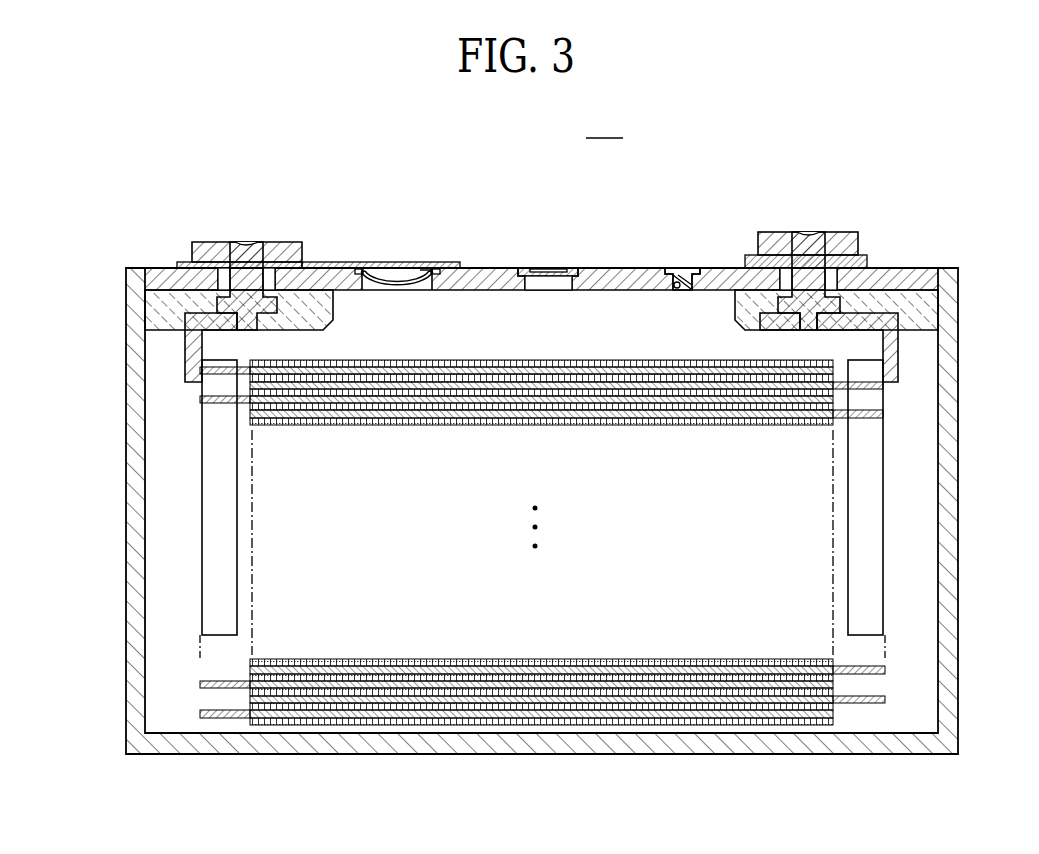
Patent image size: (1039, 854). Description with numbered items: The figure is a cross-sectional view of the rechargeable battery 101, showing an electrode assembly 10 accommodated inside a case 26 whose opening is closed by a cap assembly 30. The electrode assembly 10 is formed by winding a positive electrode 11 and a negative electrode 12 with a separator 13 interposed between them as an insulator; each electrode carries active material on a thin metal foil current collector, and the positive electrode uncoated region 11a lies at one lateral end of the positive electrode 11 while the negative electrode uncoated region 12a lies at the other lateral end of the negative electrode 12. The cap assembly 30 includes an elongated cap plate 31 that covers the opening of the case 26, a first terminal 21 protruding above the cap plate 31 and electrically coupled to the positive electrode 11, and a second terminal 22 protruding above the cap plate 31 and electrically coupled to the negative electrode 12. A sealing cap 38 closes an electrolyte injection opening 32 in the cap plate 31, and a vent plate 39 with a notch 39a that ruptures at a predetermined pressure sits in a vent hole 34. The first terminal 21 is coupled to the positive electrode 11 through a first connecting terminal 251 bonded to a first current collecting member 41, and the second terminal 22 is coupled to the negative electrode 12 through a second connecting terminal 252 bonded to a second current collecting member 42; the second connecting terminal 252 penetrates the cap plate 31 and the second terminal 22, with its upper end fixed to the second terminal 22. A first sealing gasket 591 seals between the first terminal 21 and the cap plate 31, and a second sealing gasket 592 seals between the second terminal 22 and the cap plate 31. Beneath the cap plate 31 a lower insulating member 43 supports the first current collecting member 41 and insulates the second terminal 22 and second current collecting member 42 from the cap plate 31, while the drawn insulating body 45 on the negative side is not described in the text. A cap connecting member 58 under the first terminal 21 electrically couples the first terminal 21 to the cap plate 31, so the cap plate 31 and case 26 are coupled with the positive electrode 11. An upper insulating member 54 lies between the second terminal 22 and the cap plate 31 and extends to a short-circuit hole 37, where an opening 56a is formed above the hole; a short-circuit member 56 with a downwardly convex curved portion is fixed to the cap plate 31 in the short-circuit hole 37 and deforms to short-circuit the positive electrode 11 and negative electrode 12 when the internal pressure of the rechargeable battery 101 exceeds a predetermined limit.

The rechargeable battery 101 is at (604, 125).
The electrode assembly 10 is at (542, 585).
The positive electrode 11 is at (738, 698).
The positive electrode uncoated region 11a is at (866, 702).
The negative electrode 12 is at (342, 712).
The negative electrode uncoated region 12a is at (215, 718).
The separator 13 is at (547, 690).
The first terminal 21 is at (843, 233).
The second terminal 22 is at (205, 242).
The first connecting terminal 251 is at (810, 236).
The second connecting terminal 252 is at (247, 243).
The case 26 is at (945, 544).
The cap assembly 30 is at (537, 259).
The cap plate 31 is at (920, 270).
The electrolyte injection opening 32 is at (678, 291).
The vent hole 34 is at (548, 292).
The short-circuit hole 37 is at (372, 268).
The sealing cap 38 is at (680, 270).
The vent plate 39 is at (570, 269).
The notch 39a is at (548, 269).
The first current collecting member 41 is at (868, 400).
The second current collecting member 42 is at (213, 460).
The lower insulating member 43 is at (917, 308).
The negative lower insulating member 45 is at (162, 308).
The upper insulating member 54 is at (313, 262).
The short-circuit member 56 is at (397, 282).
The opening 56a is at (413, 268).
The cap connecting member 58 is at (863, 259).
The first sealing gasket 591 is at (780, 280).
The second sealing gasket 592 is at (205, 280).